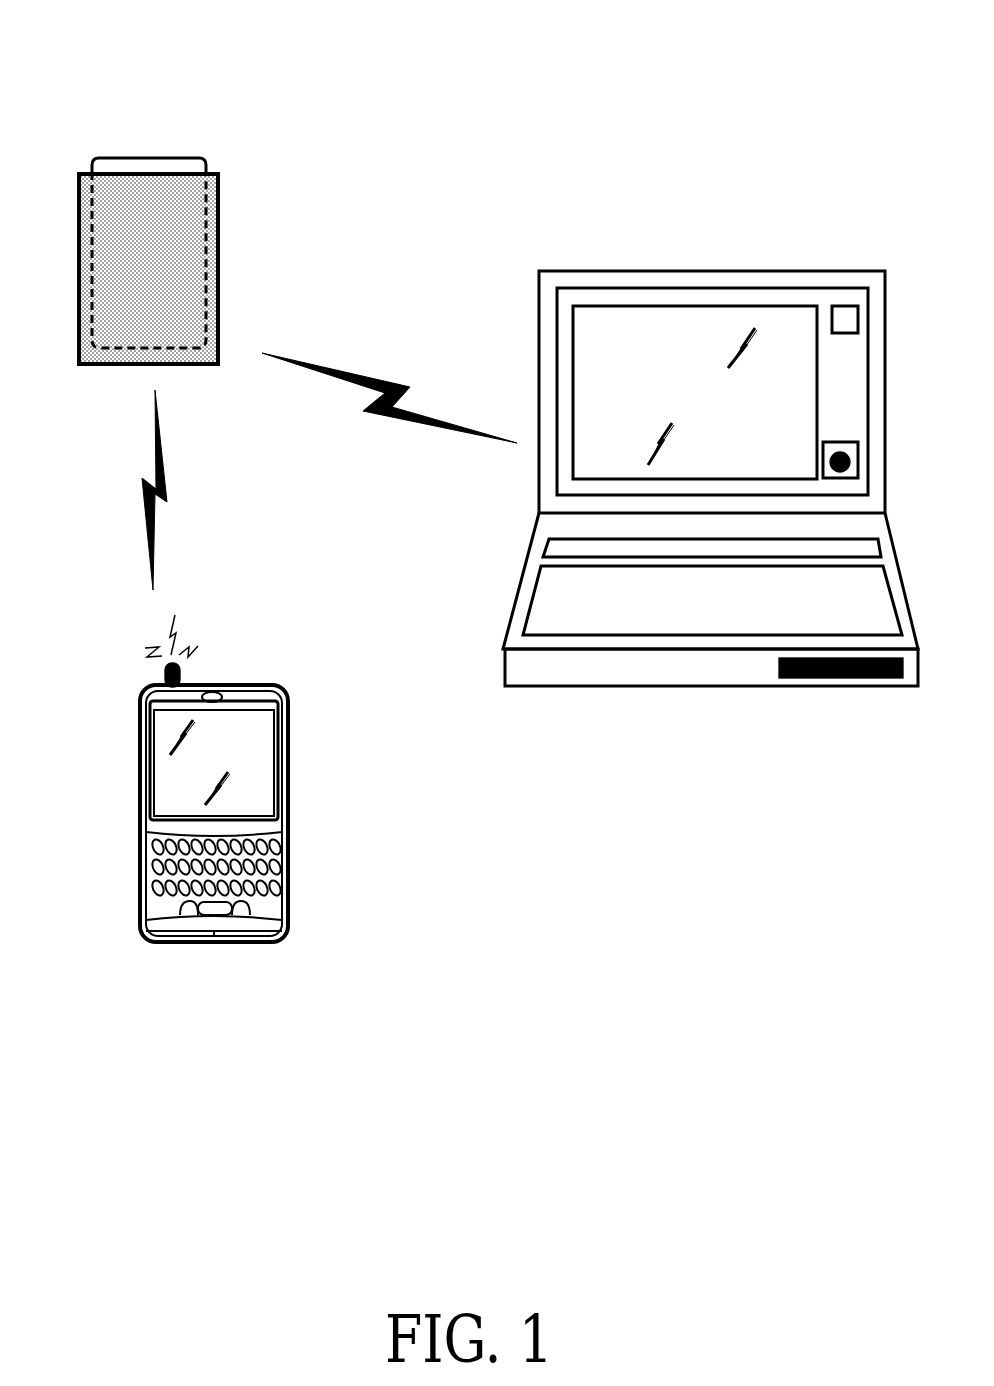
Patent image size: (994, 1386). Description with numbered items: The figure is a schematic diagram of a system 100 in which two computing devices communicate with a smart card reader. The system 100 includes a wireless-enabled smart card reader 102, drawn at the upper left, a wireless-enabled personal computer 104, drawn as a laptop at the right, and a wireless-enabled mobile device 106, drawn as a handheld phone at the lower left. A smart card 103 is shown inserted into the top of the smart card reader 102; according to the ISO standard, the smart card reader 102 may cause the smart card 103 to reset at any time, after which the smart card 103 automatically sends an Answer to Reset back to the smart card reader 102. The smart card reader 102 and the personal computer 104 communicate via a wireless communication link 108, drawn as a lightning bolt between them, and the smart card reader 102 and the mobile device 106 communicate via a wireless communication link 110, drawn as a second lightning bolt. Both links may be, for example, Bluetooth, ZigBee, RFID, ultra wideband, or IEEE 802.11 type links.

The system 100 is at (416, 162).
The smart card reader 102 is at (221, 268).
The smart card 103 is at (155, 158).
The personal computer 104 is at (697, 273).
The mobile device 106 is at (140, 835).
The wireless communication link 108 is at (365, 372).
The wireless communication link 110 is at (145, 527).